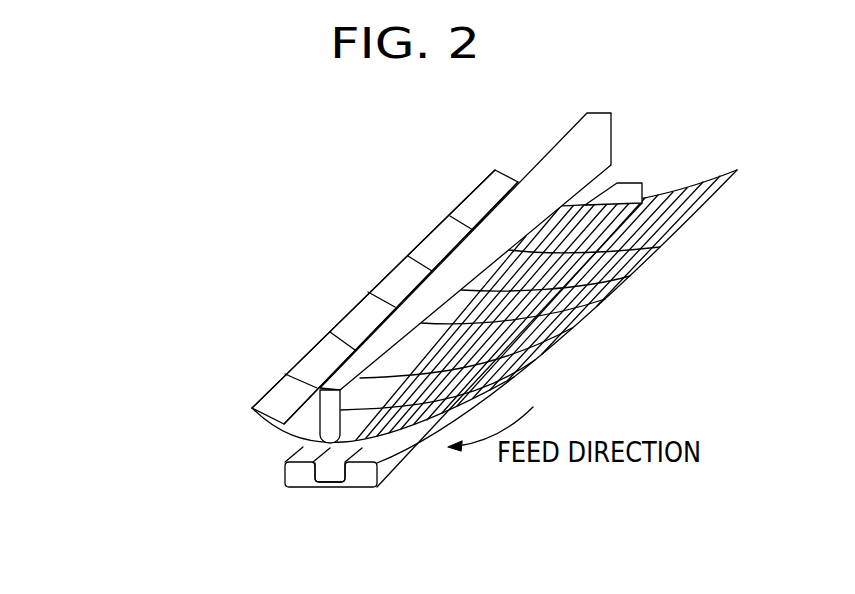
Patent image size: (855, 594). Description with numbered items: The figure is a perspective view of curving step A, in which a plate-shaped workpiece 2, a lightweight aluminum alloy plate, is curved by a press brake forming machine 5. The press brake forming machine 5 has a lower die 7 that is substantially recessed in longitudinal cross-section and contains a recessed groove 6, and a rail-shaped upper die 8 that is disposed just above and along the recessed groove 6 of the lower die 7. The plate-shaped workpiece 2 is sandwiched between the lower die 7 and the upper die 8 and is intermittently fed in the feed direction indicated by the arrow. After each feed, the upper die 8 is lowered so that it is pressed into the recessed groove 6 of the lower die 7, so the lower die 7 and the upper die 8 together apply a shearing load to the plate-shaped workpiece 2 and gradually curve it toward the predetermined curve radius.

The plate-shaped workpiece 2 is at (703, 203).
The press brake forming machine 5 is at (411, 278).
The recessed groove 6 is at (318, 468).
The lower die 7 is at (285, 463).
The upper die 8 is at (383, 330).
The curving step A is at (182, 290).